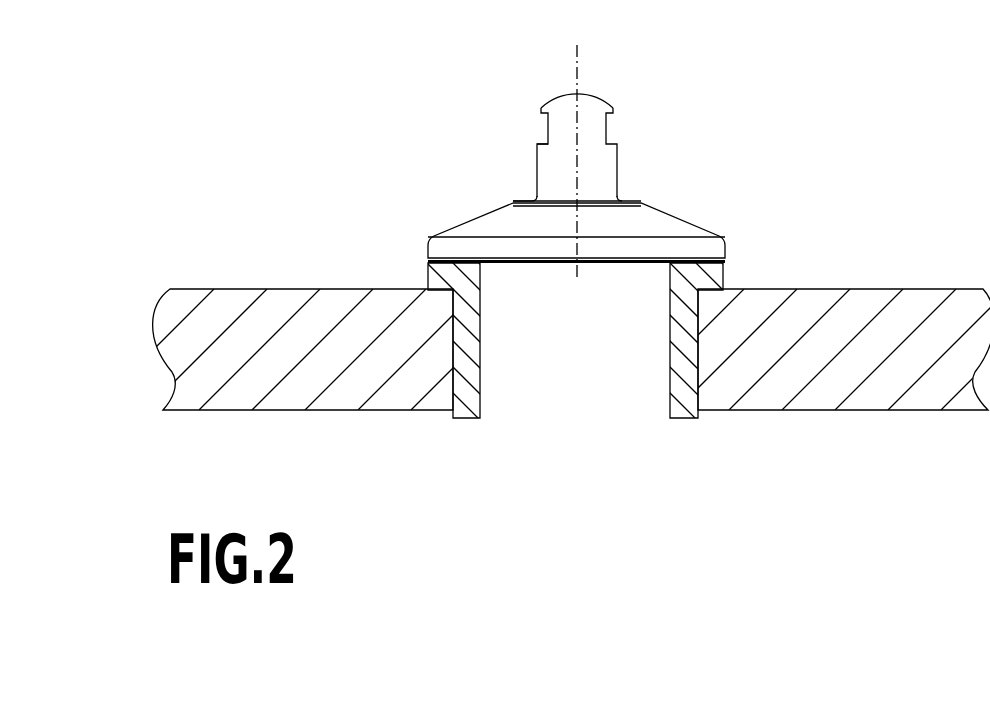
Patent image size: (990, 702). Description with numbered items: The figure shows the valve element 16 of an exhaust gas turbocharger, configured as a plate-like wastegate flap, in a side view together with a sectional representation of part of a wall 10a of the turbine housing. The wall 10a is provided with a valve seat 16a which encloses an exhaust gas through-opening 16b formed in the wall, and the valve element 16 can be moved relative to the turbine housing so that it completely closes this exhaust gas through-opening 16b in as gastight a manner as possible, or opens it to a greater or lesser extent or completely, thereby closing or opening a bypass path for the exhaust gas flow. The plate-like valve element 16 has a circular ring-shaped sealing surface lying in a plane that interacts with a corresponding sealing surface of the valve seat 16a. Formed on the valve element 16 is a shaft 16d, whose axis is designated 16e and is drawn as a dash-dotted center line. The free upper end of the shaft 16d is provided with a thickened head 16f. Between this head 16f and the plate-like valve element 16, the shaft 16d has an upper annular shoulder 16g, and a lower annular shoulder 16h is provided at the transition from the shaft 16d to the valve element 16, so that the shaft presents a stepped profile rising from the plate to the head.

The wall 10a is at (237, 308).
The valve element 16 is at (581, 149).
The valve seat 16a is at (447, 272).
The exhaust gas through-opening 16b is at (482, 383).
The shaft 16d is at (625, 160).
The axis 16e is at (577, 73).
The head 16f is at (568, 113).
The upper annular shoulder 16g is at (547, 145).
The lower annular shoulder 16h is at (525, 199).